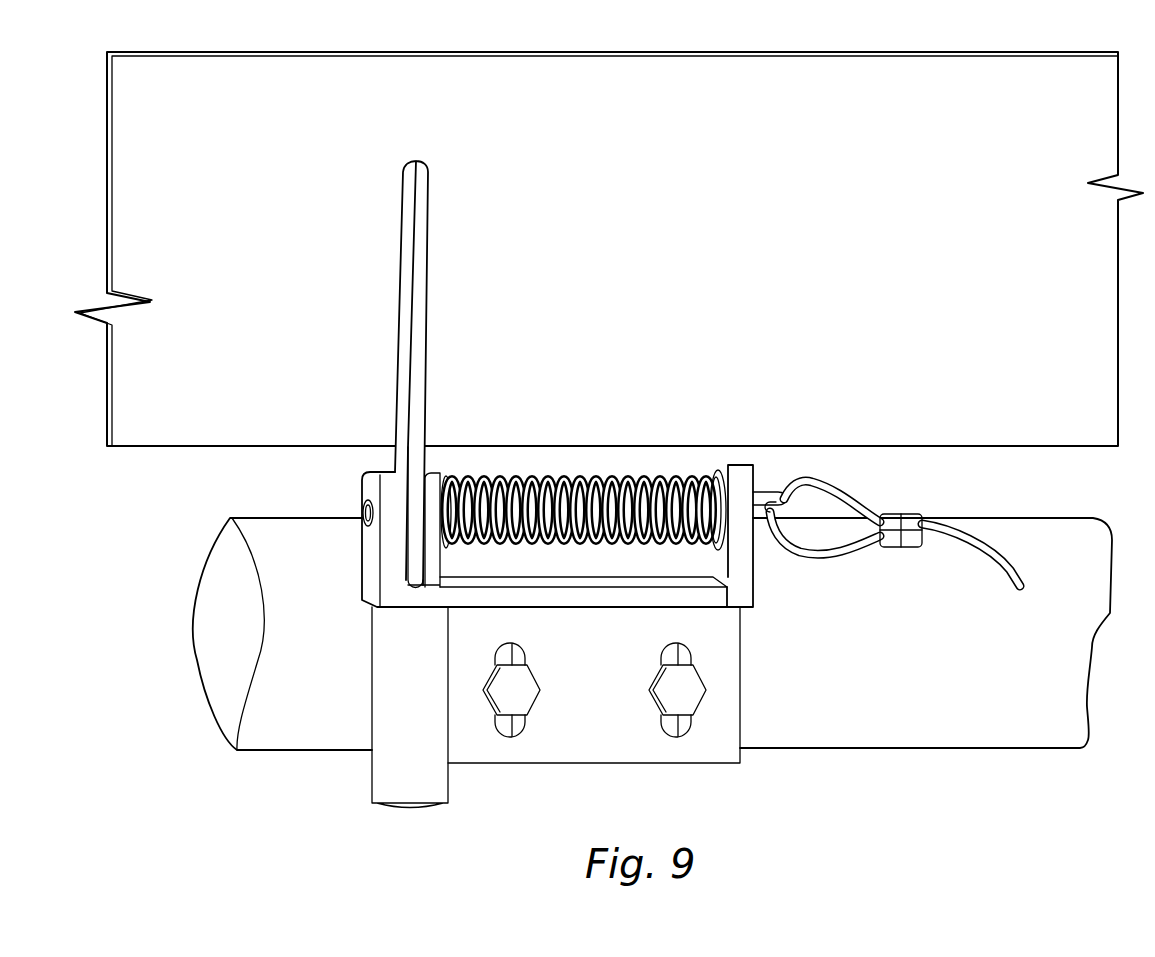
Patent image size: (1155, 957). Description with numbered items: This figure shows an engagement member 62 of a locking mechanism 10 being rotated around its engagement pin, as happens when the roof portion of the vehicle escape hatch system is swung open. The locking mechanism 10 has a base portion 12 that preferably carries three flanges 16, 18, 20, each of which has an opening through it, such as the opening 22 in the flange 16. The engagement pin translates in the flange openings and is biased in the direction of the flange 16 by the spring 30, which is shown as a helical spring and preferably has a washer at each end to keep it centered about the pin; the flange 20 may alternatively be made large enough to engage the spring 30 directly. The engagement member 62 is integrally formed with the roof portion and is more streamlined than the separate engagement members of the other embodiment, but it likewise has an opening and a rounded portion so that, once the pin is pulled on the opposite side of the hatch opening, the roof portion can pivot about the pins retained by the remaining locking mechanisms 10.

The locking mechanism 10 is at (745, 736).
The base portion 12 is at (568, 607).
The flange 16 is at (388, 582).
The flange 18 is at (436, 549).
The flange 20 is at (742, 567).
The opening 22 is at (362, 495).
The spring 30 is at (648, 478).
The engagement member 62 is at (408, 248).